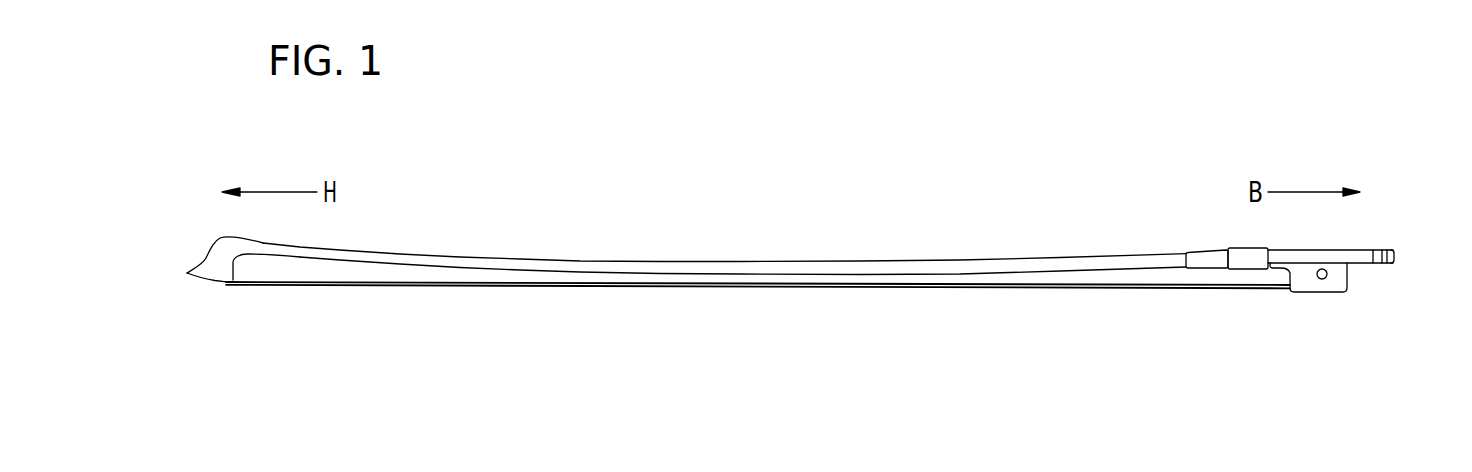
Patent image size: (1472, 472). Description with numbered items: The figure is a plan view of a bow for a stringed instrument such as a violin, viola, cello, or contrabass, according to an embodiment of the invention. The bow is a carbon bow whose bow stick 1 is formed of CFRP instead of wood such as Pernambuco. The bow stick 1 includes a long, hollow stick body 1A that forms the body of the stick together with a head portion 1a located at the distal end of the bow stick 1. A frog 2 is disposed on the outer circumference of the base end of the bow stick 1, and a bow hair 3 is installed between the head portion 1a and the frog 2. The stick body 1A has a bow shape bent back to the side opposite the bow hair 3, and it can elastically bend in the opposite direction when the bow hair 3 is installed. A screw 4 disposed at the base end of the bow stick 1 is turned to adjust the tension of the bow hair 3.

The bow stick 1 is at (756, 225).
The stick body 1A is at (798, 260).
The head portion 1a is at (200, 265).
The frog 2 is at (1318, 293).
The bow hair 3 is at (850, 285).
The screw 4 is at (1397, 256).